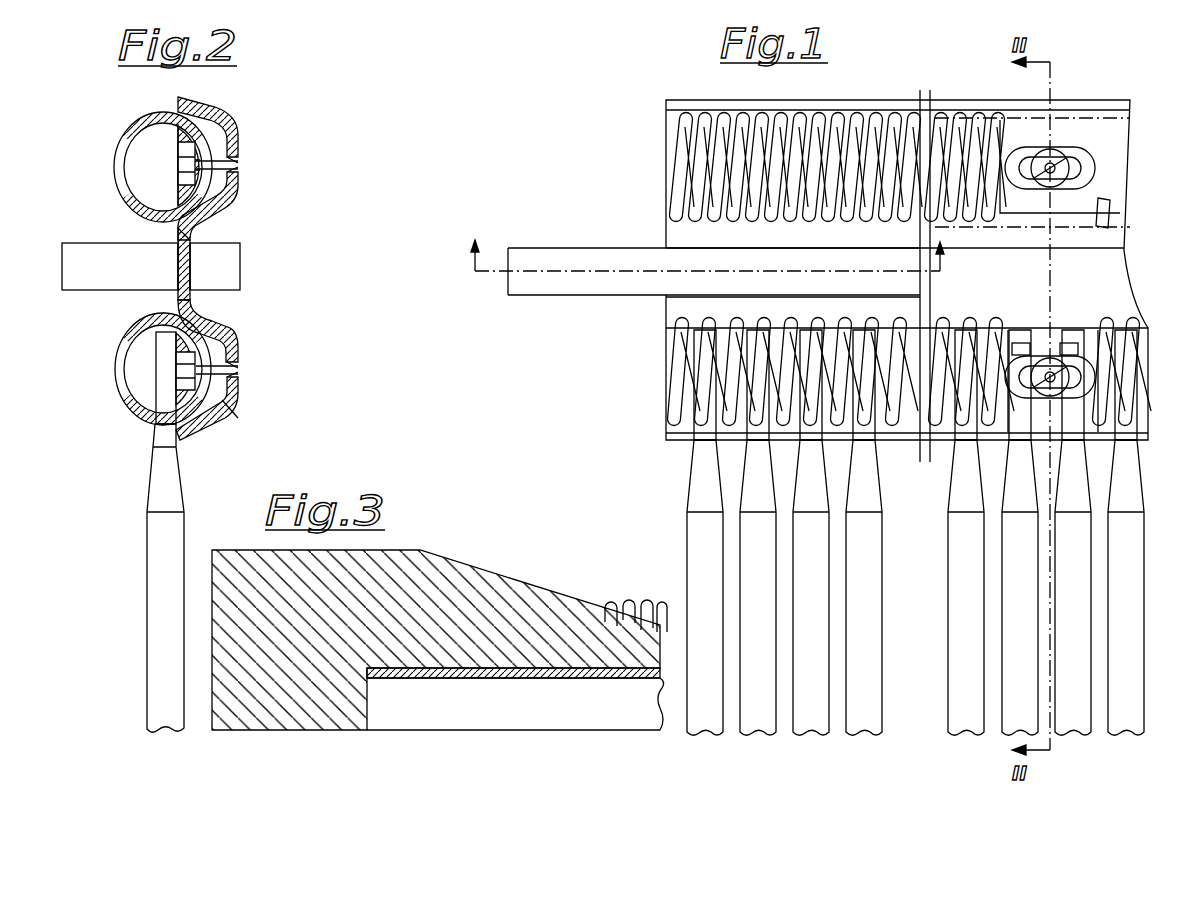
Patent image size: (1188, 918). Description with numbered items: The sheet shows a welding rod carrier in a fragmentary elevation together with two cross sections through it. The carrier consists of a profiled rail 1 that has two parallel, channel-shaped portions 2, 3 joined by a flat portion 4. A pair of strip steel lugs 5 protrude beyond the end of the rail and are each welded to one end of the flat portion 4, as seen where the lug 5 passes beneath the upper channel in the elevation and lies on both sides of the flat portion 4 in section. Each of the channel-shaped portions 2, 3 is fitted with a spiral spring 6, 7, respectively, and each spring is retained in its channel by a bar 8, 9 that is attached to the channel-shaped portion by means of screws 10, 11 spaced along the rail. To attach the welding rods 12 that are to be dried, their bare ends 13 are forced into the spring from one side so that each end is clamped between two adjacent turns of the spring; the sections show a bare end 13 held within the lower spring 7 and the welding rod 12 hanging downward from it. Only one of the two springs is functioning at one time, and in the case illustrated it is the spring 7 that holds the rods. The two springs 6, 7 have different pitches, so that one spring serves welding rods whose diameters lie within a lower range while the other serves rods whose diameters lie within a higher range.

In FIG. 1, the profiled rail 1 is at (664, 193).
In FIG. 2, the profiled rail 1 is at (238, 211).
In FIG. 2, the channel-shaped portion 2 is at (223, 103).
In FIG. 2, the channel-shaped portion 3 is at (228, 403).
In FIG. 2, the flat portion 4 is at (182, 270).
In FIG. 3, the flat portion 4 is at (508, 670).
In FIG. 1, the strip steel lug 5 is at (587, 287).
In FIG. 2, the strip steel lug 5 is at (87, 278).
In FIG. 3, the strip steel lug 5 is at (284, 715).
In FIG. 1, the spiral spring 6 is at (680, 155).
In FIG. 2, the spiral spring 6 is at (122, 142).
In FIG. 3, the spiral spring 6 is at (633, 603).
In FIG. 1, the spiral spring 7 is at (680, 362).
In FIG. 2, the spiral spring 7 is at (122, 385).
In FIG. 1, the bar 8 is at (1095, 140).
In FIG. 2, the bar 8 is at (180, 197).
In FIG. 1, the bar 9 is at (1044, 349).
In FIG. 2, the bar 9 is at (230, 413).
In FIG. 1, the screw 10 is at (1052, 165).
In FIG. 2, the screw 10 is at (240, 166).
In FIG. 1, the lower slot 11 is at (1052, 370).
In FIG. 2, the lower slot 11 is at (223, 373).
In FIG. 1, the welding rod 12 is at (965, 587).
In FIG. 2, the welding rod 12 is at (162, 548).
In FIG. 1, the bare end 13 is at (703, 395).
In FIG. 2, the bare end 13 is at (155, 397).